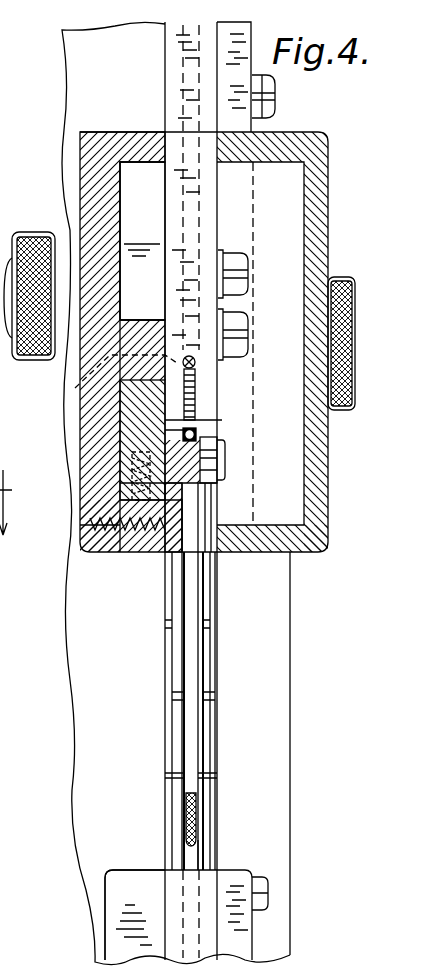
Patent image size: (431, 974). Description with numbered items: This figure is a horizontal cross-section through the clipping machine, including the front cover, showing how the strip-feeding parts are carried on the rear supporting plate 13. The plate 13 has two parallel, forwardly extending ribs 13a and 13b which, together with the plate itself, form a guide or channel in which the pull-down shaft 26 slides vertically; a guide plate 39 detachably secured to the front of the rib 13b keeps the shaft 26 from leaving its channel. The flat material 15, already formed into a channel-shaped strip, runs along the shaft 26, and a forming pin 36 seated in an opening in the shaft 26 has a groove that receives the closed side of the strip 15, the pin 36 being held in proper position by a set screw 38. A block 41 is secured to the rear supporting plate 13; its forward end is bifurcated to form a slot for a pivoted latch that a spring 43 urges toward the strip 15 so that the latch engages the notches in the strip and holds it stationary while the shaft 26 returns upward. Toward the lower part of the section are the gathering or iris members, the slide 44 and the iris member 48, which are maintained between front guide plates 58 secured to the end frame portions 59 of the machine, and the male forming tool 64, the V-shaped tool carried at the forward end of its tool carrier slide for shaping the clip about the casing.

The rear supporting plate 13 is at (82, 517).
The rib 13a is at (133, 342).
The rib 13b is at (160, 575).
The flat material 15 is at (200, 433).
The pull-down shaft 26 is at (118, 432).
The forming pin 36 is at (210, 437).
The set screw 38 is at (135, 486).
The guide plate 39 is at (178, 540).
The block 41 is at (208, 265).
The spring 43 is at (195, 384).
The slide 44 is at (168, 796).
The iris member 48 is at (207, 560).
The front guide plate 58 is at (247, 33).
The end frame portion 59 is at (124, 877).
The male forming tool 64 is at (195, 822).